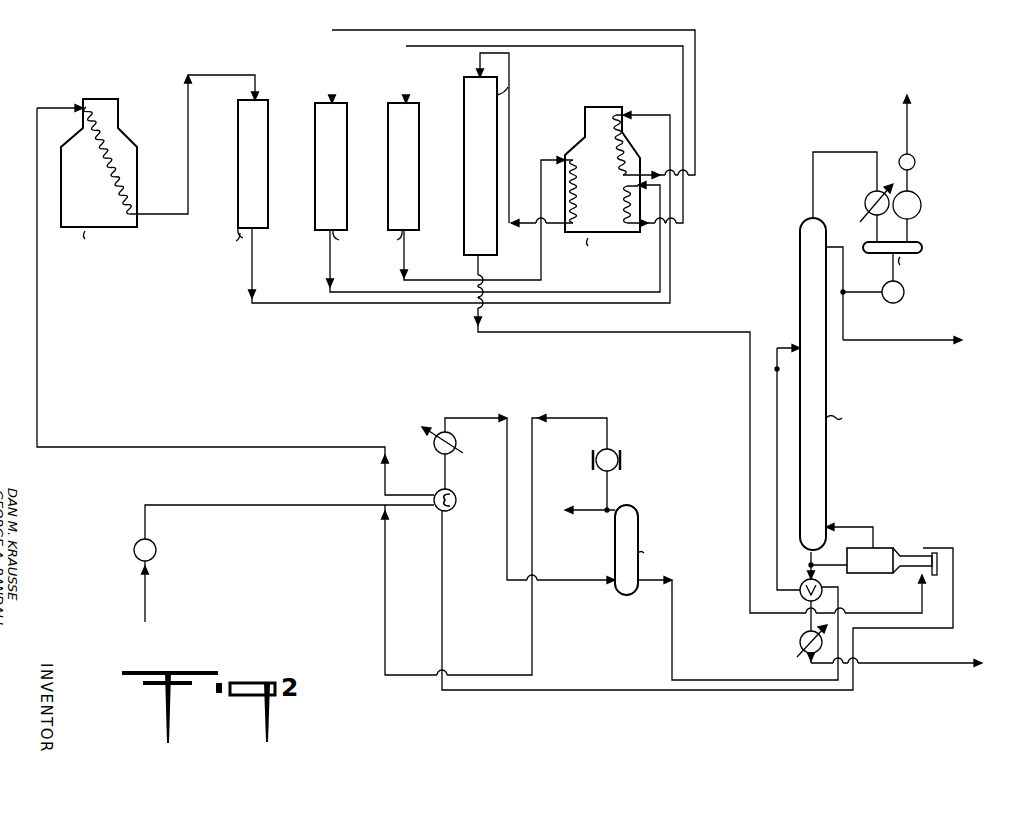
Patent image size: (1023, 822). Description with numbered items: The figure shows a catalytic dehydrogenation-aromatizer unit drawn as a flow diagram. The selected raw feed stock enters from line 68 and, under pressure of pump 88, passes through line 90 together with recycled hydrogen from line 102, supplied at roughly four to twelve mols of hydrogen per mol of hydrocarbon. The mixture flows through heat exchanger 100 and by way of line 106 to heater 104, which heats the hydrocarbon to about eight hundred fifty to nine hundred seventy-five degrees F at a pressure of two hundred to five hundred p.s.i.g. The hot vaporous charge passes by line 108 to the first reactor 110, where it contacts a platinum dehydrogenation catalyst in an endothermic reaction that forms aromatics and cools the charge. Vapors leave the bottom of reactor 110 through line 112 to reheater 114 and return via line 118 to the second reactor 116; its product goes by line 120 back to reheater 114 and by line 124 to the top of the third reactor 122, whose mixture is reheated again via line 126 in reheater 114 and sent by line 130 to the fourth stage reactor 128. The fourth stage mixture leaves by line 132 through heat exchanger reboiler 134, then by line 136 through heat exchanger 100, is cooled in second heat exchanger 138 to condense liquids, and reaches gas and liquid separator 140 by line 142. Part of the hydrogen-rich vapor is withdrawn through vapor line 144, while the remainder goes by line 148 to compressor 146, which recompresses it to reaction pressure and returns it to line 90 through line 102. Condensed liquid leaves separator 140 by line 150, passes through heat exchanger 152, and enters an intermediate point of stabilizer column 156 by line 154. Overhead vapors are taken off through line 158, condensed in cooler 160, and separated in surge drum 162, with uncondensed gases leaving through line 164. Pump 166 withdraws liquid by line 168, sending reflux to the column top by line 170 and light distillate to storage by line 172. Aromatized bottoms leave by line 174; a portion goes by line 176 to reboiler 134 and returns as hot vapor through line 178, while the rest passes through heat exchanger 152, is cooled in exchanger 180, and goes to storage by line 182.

The feed line 68 is at (145, 590).
The pump 88 is at (151, 541).
The feed line 90 is at (334, 502).
The heat exchanger 100 is at (450, 491).
The hydrogen line 102 is at (595, 416).
The heater 104 is at (107, 100).
The line 106 is at (37, 200).
The line 108 is at (202, 75).
The first reactor 110 is at (246, 99).
The line 112 is at (251, 294).
The reheater 114 is at (612, 107).
The second reactor 116 is at (323, 101).
The line 118 is at (452, 30).
The line 120 is at (624, 292).
The third reactor 122 is at (397, 104).
The line 124 is at (405, 50).
The line 126 is at (406, 280).
The fourth stage reactor 128 is at (464, 85).
The line 130 is at (509, 60).
The line 132 is at (752, 403).
The heat exchanger reboiler 134 is at (882, 548).
The line 136 is at (580, 690).
The second heat exchanger 138 is at (454, 438).
The gas and liquid separator 140 is at (640, 528).
The line 142 is at (481, 416).
The vapor line 144 is at (595, 504).
The compressor 146 is at (620, 450).
The line 148 is at (609, 488).
The line 150 is at (672, 628).
The heat exchanger 152 is at (801, 596).
The line 154 is at (777, 369).
The stabilizer column 156 is at (799, 279).
The overhead line 158 is at (863, 152).
The cooler 160 is at (870, 192).
The surge drum 162 is at (914, 242).
The vapor line 164 is at (907, 185).
The pump 166 is at (901, 299).
The line 168 is at (896, 278).
The reflux line 170 is at (843, 262).
The distillate line 172 is at (884, 340).
The bottoms line 174 is at (810, 565).
The line 176 is at (825, 567).
The line 178 is at (852, 527).
The exchanger 180 is at (800, 643).
The line 182 is at (930, 661).